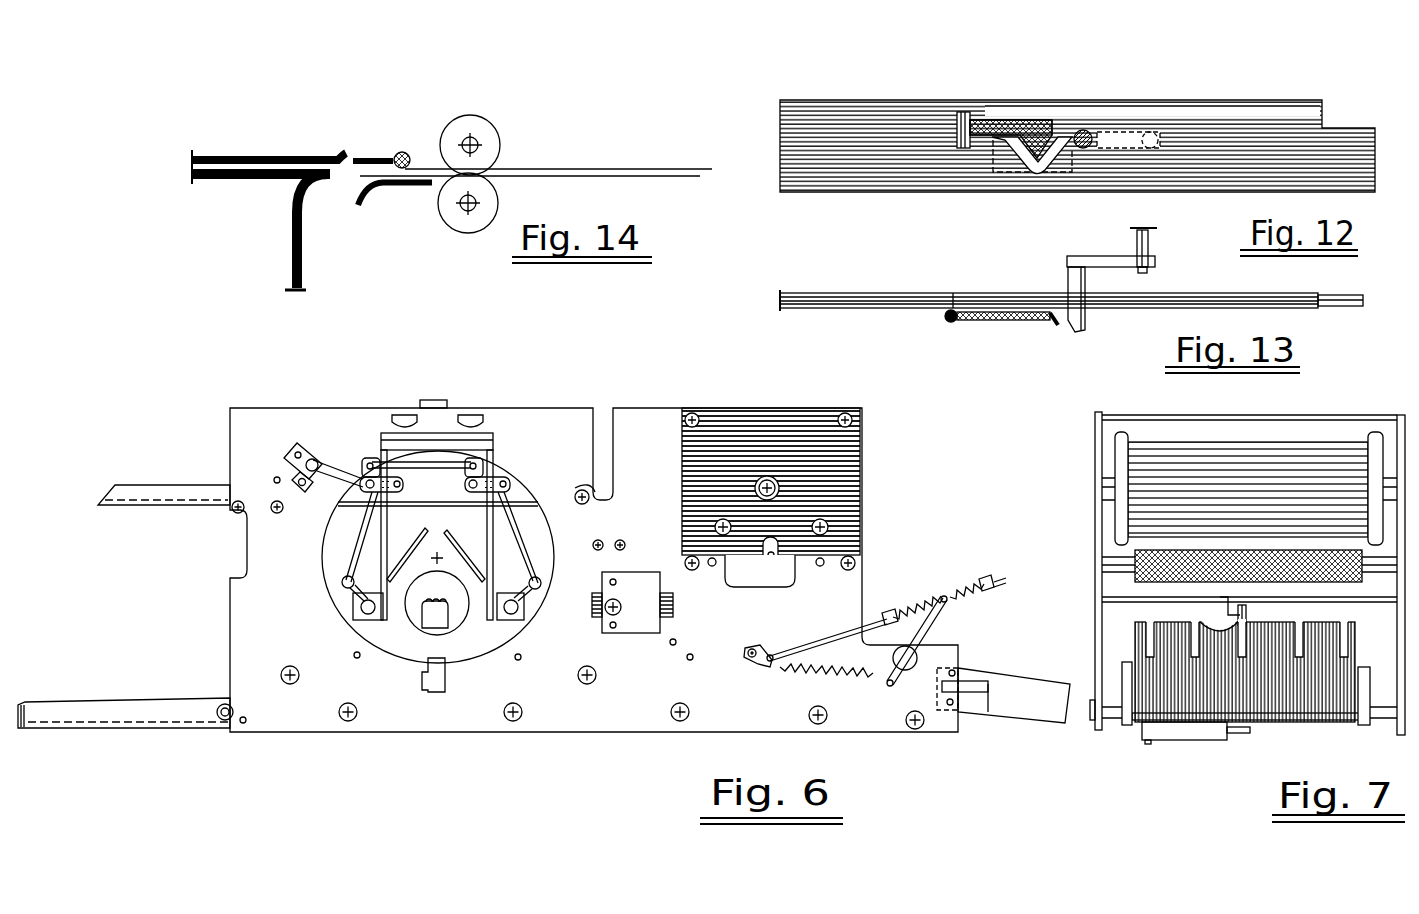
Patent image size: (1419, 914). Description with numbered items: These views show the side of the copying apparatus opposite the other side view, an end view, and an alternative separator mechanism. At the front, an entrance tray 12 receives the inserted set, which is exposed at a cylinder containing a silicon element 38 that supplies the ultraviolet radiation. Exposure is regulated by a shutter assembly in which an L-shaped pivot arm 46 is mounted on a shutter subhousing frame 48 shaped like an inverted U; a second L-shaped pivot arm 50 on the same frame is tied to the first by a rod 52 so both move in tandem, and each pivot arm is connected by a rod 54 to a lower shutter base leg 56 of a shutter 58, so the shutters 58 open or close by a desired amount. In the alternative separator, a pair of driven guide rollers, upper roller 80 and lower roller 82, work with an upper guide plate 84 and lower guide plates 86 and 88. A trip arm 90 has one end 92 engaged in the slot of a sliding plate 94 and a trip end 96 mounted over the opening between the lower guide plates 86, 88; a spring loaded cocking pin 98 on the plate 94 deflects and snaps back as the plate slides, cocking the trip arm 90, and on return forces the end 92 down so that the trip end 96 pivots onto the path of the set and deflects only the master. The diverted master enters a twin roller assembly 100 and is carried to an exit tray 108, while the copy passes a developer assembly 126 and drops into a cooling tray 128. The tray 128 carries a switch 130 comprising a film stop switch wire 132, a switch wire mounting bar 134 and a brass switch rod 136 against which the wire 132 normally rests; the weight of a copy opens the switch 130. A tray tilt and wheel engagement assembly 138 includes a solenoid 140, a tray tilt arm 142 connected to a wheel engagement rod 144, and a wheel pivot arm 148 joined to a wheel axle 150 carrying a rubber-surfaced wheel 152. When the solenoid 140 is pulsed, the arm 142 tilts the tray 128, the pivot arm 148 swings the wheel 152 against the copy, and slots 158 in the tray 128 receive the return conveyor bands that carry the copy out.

In FIG. 6, the entrance tray 12 is at (195, 485).
In FIG. 6, the silicon element 38 is at (452, 604).
In FIG. 6, the L-shaped pivot arm 46 is at (375, 476).
In FIG. 6, the shutter subhousing frame 48 is at (495, 530).
In FIG. 6, the second L-shaped pivot arm 50 is at (500, 460).
In FIG. 6, the rod 52 is at (445, 433).
In FIG. 6, the rod 54 is at (353, 550).
In FIG. 6, the lower shutter base leg 56 is at (345, 584).
In FIG. 6, the shutter 58 is at (470, 545).
In FIG. 14, the upper roller 80 is at (498, 125).
In FIG. 14, the lower roller 82 is at (452, 224).
In FIG. 14, the upper guide plate 84 is at (225, 155).
In FIG. 14, the lower guide plate 86 is at (292, 228).
In FIG. 14, the lower guide plate 88 is at (372, 194).
In FIG. 13, the trip arm 90 is at (1120, 256).
In FIG. 12, the end of trip arm 92 is at (1048, 164).
In FIG. 13, the end of trip arm 92 is at (1082, 332).
In FIG. 12, the sliding plate 94 is at (858, 100).
In FIG. 13, the sliding plate 94 is at (803, 310).
In FIG. 14, the trip end 96 is at (380, 157).
In FIG. 13, the trip end 96 is at (1149, 243).
In FIG. 12, the spring loaded cocking pin 98 is at (1003, 120).
In FIG. 13, the spring loaded cocking pin 98 is at (978, 319).
In FIG. 6, the twin roller assembly 100 is at (641, 620).
In FIG. 6, the exit tray 108 is at (82, 703).
In FIG. 6, the developer assembly 126 is at (810, 465).
In FIG. 7, the developer assembly 126 is at (1115, 446).
In FIG. 7, the cooling tray 128 is at (1202, 661).
In FIG. 7, the switch 130 is at (1177, 752).
In FIG. 7, the film stop switch wire 132 is at (1228, 738).
In FIG. 7, the switch wire mounting bar 134 is at (1140, 728).
In FIG. 7, the brass switch rod 136 is at (1250, 731).
In FIG. 6, the tray tilt and wheel engagement assembly 138 is at (893, 651).
In FIG. 6, the solenoid 140 is at (997, 716).
In FIG. 6, the tray tilt arm 142 is at (927, 623).
In FIG. 6, the wheel engagement rod 144 is at (855, 628).
In FIG. 6, the wheel pivot arm 148 is at (775, 668).
In FIG. 7, the wheel axle 150 is at (1137, 597).
In FIG. 7, the wheel 152 is at (1247, 610).
In FIG. 7, the slots 158 is at (1148, 622).